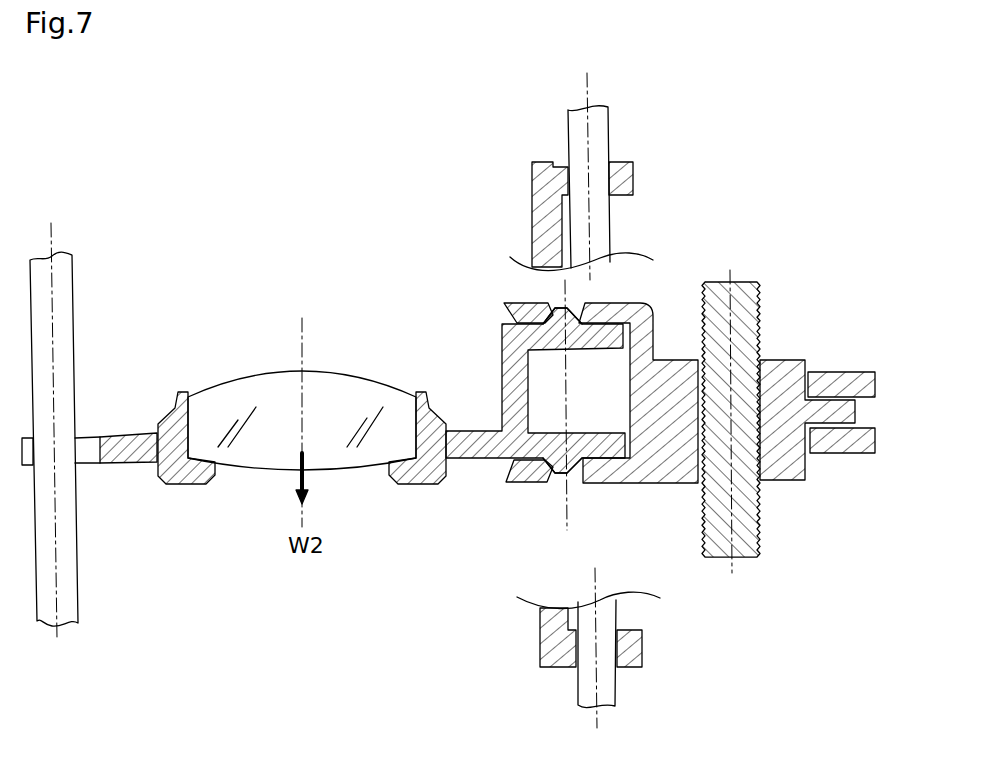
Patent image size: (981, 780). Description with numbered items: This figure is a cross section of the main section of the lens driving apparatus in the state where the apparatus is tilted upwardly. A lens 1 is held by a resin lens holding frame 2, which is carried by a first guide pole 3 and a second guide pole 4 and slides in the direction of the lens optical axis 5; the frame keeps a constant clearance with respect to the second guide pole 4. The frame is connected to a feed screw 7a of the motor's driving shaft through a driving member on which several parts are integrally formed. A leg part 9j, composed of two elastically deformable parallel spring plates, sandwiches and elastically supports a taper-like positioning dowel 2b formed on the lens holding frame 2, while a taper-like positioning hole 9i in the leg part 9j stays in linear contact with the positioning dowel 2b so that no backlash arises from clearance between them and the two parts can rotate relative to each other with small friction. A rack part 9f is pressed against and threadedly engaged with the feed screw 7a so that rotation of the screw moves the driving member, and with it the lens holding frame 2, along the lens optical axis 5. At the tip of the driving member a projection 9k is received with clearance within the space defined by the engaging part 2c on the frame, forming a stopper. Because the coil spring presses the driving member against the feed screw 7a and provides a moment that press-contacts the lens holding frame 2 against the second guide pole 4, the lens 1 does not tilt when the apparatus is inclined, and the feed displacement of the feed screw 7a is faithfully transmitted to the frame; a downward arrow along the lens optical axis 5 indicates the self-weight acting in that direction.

The lens 1 is at (234, 399).
The lens holding frame 2 is at (428, 474).
The positioning dowel 2b is at (547, 303).
The engaging part 2c is at (852, 448).
The first guide pole 3 is at (618, 690).
The second guide pole 4 is at (67, 584).
The lens optical axis 5 is at (302, 318).
The feed screw 7a is at (751, 558).
The rack part 9f is at (732, 360).
The positioning hole 9i is at (572, 307).
The leg part 9j is at (634, 305).
The projection 9k is at (848, 385).